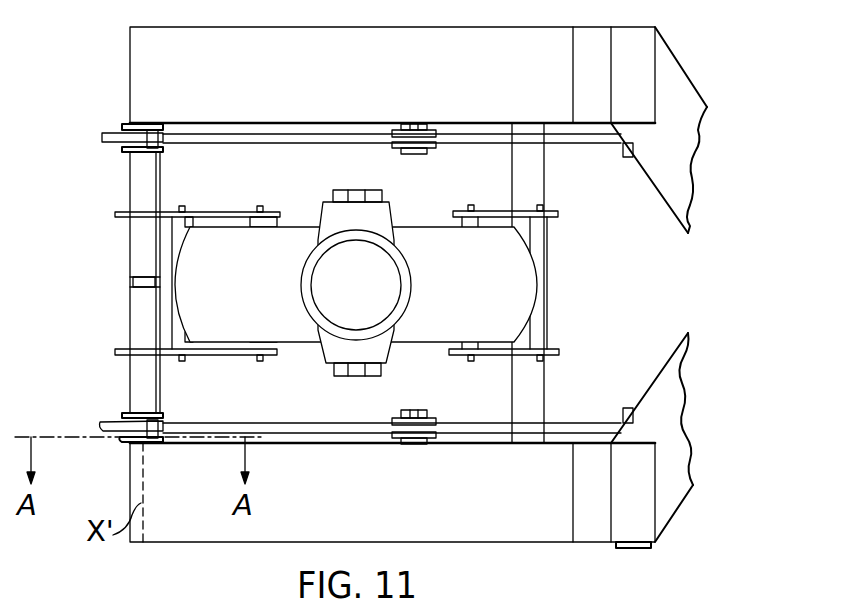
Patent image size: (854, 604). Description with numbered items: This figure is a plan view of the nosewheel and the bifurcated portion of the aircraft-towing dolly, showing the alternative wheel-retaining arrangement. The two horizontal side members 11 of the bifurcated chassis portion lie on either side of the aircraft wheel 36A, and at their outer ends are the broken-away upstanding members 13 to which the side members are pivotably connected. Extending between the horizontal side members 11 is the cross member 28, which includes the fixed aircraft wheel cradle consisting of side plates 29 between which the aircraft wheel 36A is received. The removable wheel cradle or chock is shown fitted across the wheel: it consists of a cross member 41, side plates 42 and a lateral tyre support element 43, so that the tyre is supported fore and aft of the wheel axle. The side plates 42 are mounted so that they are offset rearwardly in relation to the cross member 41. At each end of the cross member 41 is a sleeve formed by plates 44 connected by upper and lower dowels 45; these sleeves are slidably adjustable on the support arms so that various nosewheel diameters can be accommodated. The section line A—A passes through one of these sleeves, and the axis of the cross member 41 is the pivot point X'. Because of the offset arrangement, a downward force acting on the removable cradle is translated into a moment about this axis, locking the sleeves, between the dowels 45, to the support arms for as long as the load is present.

The horizontal side members 11 is at (402, 88).
The upstanding members 13 is at (700, 205).
The cross member 28 is at (535, 190).
The side plates 29 is at (488, 210).
The aircraft wheel 36A is at (208, 280).
The cross member 41 is at (140, 178).
The side plates 42 is at (207, 212).
The lateral tyre support element 43 is at (286, 216).
The plates 44 is at (121, 127).
The dowels 45 is at (170, 128).